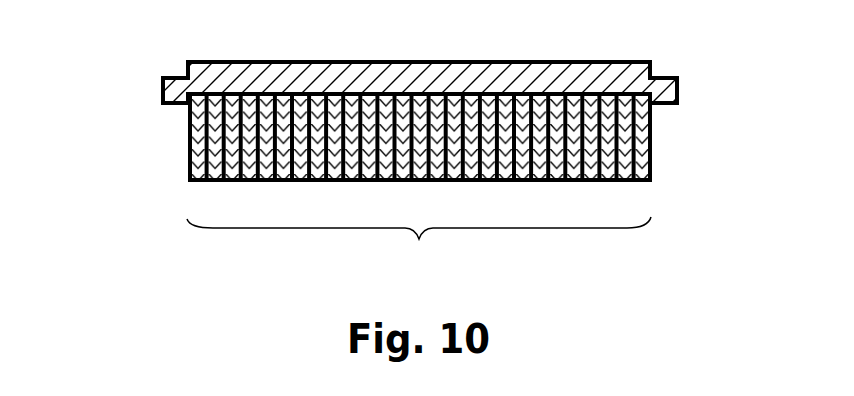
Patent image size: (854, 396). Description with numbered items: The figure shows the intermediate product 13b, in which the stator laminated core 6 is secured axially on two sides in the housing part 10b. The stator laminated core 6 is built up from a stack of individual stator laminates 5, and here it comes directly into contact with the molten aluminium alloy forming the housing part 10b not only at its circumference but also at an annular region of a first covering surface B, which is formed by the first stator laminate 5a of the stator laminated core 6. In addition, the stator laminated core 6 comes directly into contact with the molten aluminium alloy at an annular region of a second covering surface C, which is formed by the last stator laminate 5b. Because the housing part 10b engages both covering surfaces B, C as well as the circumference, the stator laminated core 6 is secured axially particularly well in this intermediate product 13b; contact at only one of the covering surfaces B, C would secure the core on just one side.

The intermediate product 13b is at (389, 92).
The housing part 10b is at (593, 70).
The stator laminate 5 is at (417, 93).
The first stator laminate 5a is at (197, 148).
The last stator laminate 5b is at (638, 148).
The stator laminated core 6 is at (419, 248).
The first covering surface B is at (175, 119).
The second covering surface C is at (665, 118).